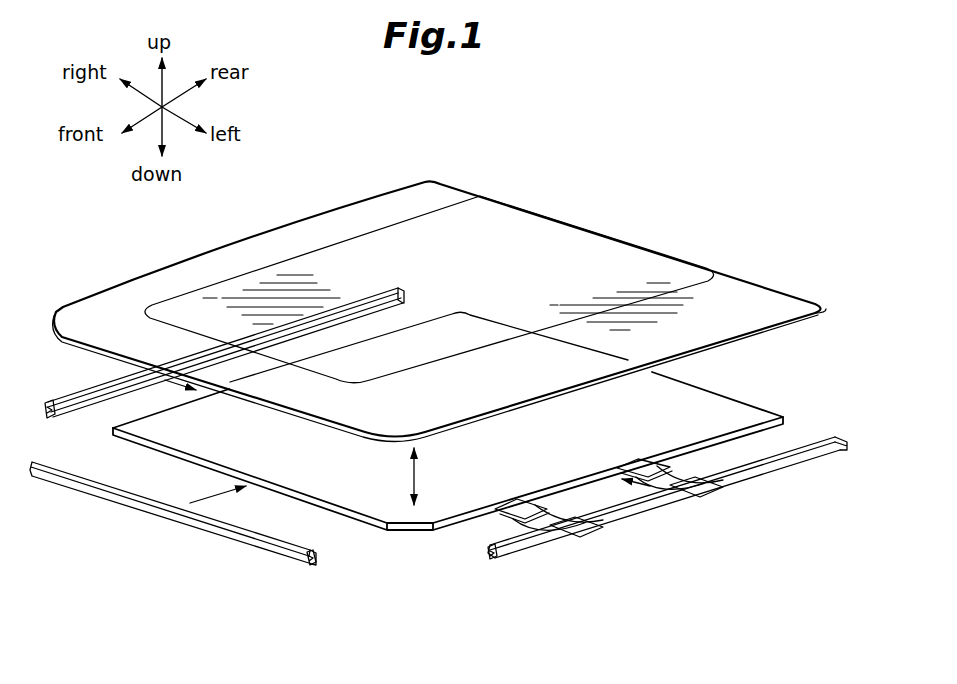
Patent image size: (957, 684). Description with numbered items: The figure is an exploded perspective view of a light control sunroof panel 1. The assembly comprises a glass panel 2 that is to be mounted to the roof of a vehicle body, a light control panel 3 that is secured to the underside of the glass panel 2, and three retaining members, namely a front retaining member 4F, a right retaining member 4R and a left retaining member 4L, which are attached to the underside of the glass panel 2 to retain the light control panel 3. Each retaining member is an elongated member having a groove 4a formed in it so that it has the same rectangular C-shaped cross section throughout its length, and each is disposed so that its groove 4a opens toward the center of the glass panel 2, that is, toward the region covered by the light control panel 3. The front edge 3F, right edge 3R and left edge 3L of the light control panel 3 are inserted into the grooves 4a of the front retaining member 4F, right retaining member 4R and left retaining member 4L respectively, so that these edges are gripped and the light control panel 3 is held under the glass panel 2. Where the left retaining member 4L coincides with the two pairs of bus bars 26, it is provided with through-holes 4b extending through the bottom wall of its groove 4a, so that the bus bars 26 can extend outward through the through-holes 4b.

The light control sunroof panel 1 is at (595, 157).
The glass panel 2 is at (608, 235).
The light control panel 3 is at (725, 398).
The right edge 3R is at (133, 418).
The front edge 3F is at (363, 523).
The left edge 3L is at (463, 524).
The right retaining member 4R is at (82, 392).
The front retaining member 4F is at (138, 503).
The left retaining member 4L is at (627, 512).
The groove 4a is at (315, 566).
The through-hole 4b is at (555, 537).
The bus bar 26 is at (596, 518).